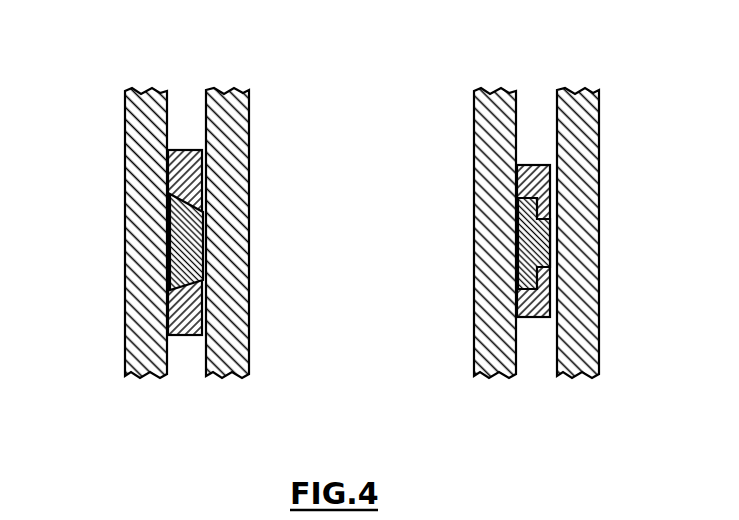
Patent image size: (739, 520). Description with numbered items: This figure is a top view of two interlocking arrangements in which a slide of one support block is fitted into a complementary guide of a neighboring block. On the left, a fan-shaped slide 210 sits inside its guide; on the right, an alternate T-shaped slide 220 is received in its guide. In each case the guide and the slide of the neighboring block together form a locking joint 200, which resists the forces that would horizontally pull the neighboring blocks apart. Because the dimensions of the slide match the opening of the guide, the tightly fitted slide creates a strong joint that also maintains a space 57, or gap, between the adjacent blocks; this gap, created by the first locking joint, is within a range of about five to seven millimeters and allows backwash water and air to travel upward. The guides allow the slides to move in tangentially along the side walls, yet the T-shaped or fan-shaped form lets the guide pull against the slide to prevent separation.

The space 57 is at (185, 102).
The locking joint 200 is at (188, 235).
The fan-shaped slide 210 is at (222, 212).
The T-shaped slide 220 is at (572, 212).